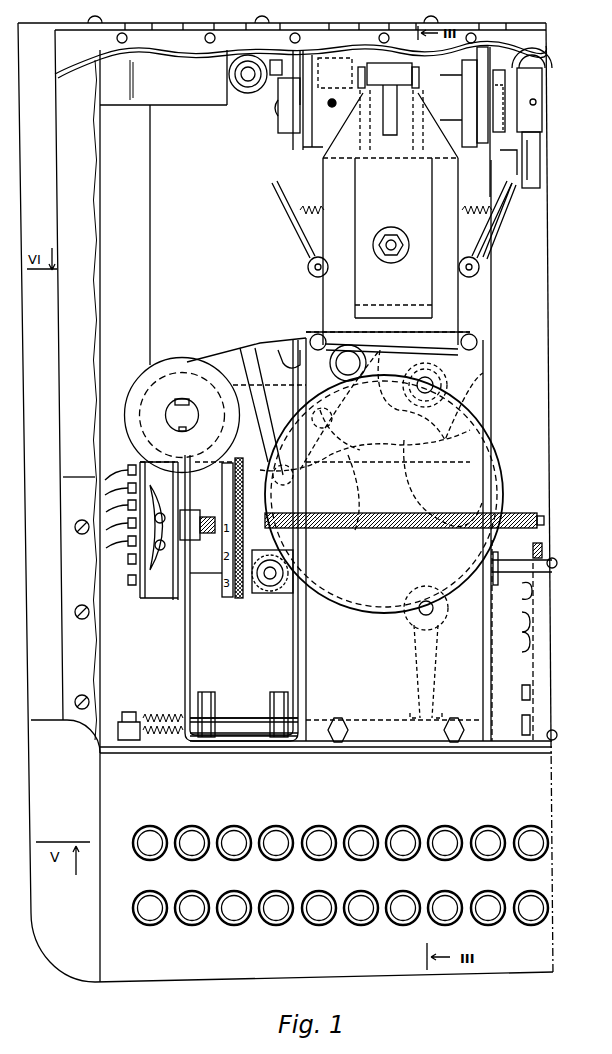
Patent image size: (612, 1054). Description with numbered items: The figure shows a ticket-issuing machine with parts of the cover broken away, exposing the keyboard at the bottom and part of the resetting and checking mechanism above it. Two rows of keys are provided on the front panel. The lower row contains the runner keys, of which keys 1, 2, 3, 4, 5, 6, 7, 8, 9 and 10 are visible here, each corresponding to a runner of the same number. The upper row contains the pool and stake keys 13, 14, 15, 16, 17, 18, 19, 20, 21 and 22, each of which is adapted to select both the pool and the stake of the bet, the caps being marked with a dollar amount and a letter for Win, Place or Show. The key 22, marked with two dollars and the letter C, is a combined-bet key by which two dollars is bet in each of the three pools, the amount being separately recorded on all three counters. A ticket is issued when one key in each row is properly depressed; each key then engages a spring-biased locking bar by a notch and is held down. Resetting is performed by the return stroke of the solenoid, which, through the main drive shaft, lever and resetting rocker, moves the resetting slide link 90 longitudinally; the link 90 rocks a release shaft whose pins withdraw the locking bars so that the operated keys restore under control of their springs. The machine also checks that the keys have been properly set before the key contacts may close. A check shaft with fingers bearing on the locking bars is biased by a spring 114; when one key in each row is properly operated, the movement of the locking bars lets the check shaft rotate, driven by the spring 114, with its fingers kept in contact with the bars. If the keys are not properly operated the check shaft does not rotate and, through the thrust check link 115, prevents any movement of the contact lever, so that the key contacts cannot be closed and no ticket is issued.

The key 1 is at (150, 891).
The key 2 is at (192, 891).
The key 3 is at (234, 891).
The key 4 is at (276, 891).
The key 5 is at (319, 891).
The key 6 is at (361, 891).
The key 7 is at (403, 891).
The key 8 is at (445, 891).
The key 9 is at (488, 891).
The key 10 is at (531, 891).
The pool and stake key 13 is at (150, 826).
The pool and stake key 14 is at (192, 826).
The pool and stake key 15 is at (234, 826).
The pool and stake key 16 is at (276, 826).
The pool and stake key 17 is at (319, 826).
The pool and stake key 18 is at (361, 826).
The pool and stake key 19 is at (403, 826).
The pool and stake key 20 is at (445, 826).
The pool and stake key 21 is at (488, 826).
The combined bet key 22 is at (531, 826).
The resetting slide link 90 is at (197, 720).
The spring 114 is at (155, 718).
The thrust check link 115 is at (132, 715).